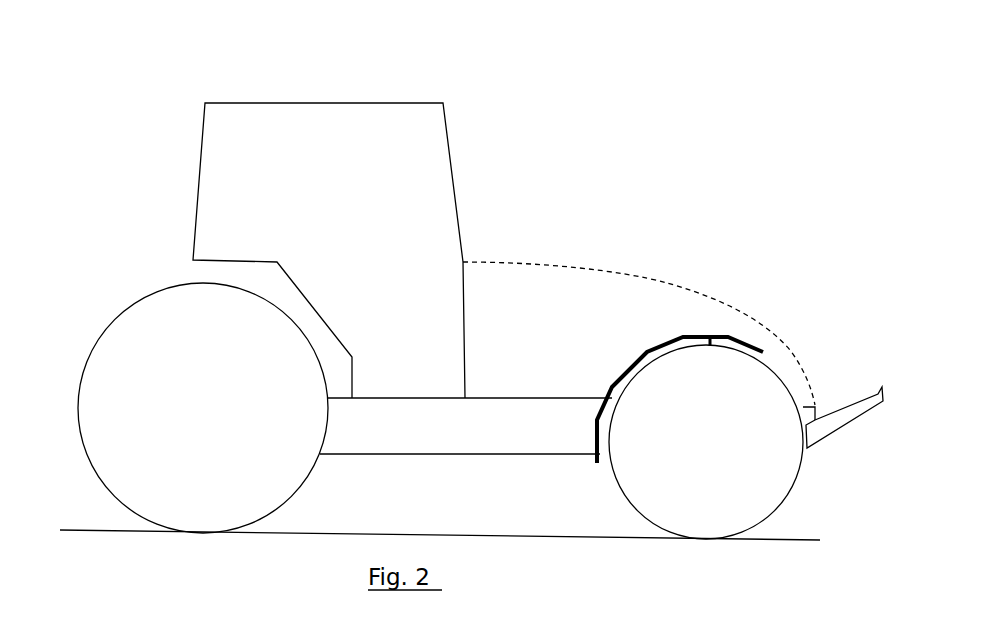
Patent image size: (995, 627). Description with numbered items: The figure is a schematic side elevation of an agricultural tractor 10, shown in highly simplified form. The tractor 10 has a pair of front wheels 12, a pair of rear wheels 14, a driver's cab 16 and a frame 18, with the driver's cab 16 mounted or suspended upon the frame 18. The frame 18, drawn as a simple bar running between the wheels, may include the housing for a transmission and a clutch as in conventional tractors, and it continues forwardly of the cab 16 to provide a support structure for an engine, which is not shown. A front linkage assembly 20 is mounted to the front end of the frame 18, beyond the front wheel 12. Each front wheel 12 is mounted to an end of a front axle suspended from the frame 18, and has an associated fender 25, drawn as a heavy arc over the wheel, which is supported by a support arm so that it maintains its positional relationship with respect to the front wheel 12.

The agricultural tractor 10 is at (136, 70).
The front wheel 12 is at (802, 480).
The rear wheel 14 is at (110, 324).
The driver's cab 16 is at (287, 103).
The frame 18 is at (482, 456).
The front linkage assembly 20 is at (859, 382).
The fender 25 is at (641, 358).